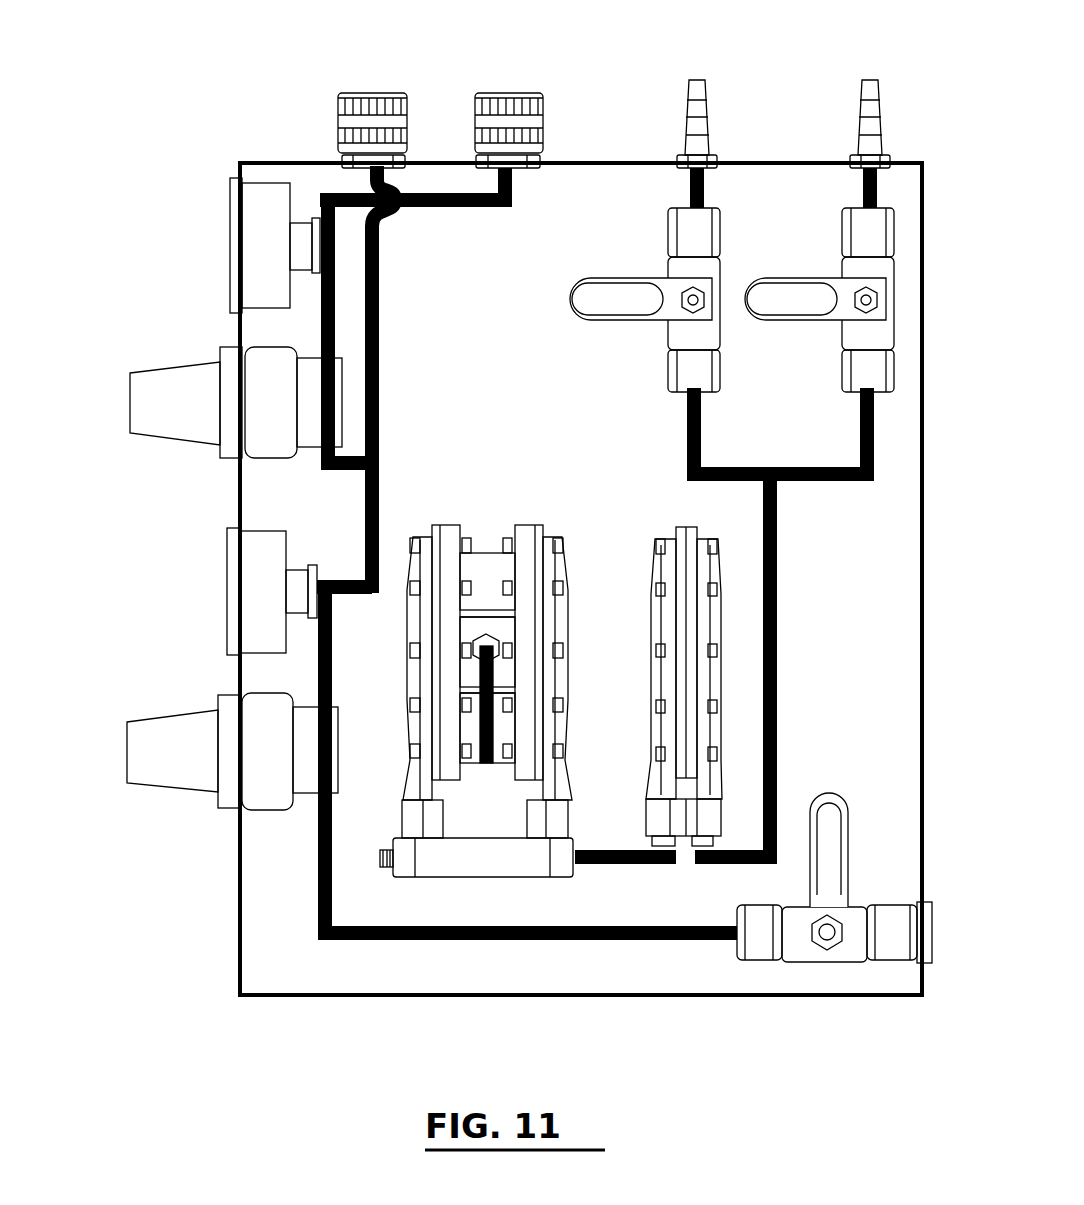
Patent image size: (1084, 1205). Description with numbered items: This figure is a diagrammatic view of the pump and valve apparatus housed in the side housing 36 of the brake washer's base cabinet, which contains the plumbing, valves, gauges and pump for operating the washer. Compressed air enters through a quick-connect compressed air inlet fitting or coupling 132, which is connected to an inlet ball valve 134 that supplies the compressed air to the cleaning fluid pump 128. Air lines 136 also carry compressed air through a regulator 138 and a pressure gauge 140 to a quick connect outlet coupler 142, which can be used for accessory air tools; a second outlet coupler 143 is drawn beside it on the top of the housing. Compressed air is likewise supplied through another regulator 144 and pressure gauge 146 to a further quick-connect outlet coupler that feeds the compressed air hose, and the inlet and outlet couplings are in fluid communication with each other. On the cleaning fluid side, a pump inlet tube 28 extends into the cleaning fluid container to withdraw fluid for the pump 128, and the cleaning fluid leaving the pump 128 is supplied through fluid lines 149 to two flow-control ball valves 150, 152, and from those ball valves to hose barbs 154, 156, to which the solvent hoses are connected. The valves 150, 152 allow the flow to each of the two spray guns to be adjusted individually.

The side housing 36 is at (226, 82).
The quick connect outlet coupler 142 is at (350, 93).
The quick-connect coupling 143 is at (514, 93).
The hose barb 154 is at (710, 104).
The hose barb 156 is at (856, 104).
The pressure gauge 146 is at (228, 287).
The regulator 144 is at (180, 448).
The pressure gauge 140 is at (228, 613).
The regulator 138 is at (180, 785).
The air lines 136 is at (314, 907).
The pump inlet tube 28 is at (380, 860).
The cleaning fluid pump 128 is at (490, 553).
The fluid lines 149 is at (779, 668).
The flow-control ball valve 150 is at (667, 340).
The flow-control ball valve 152 is at (842, 352).
The inlet ball valve 134 is at (793, 962).
The quick-connect compressed air inlet fitting 132 is at (927, 963).